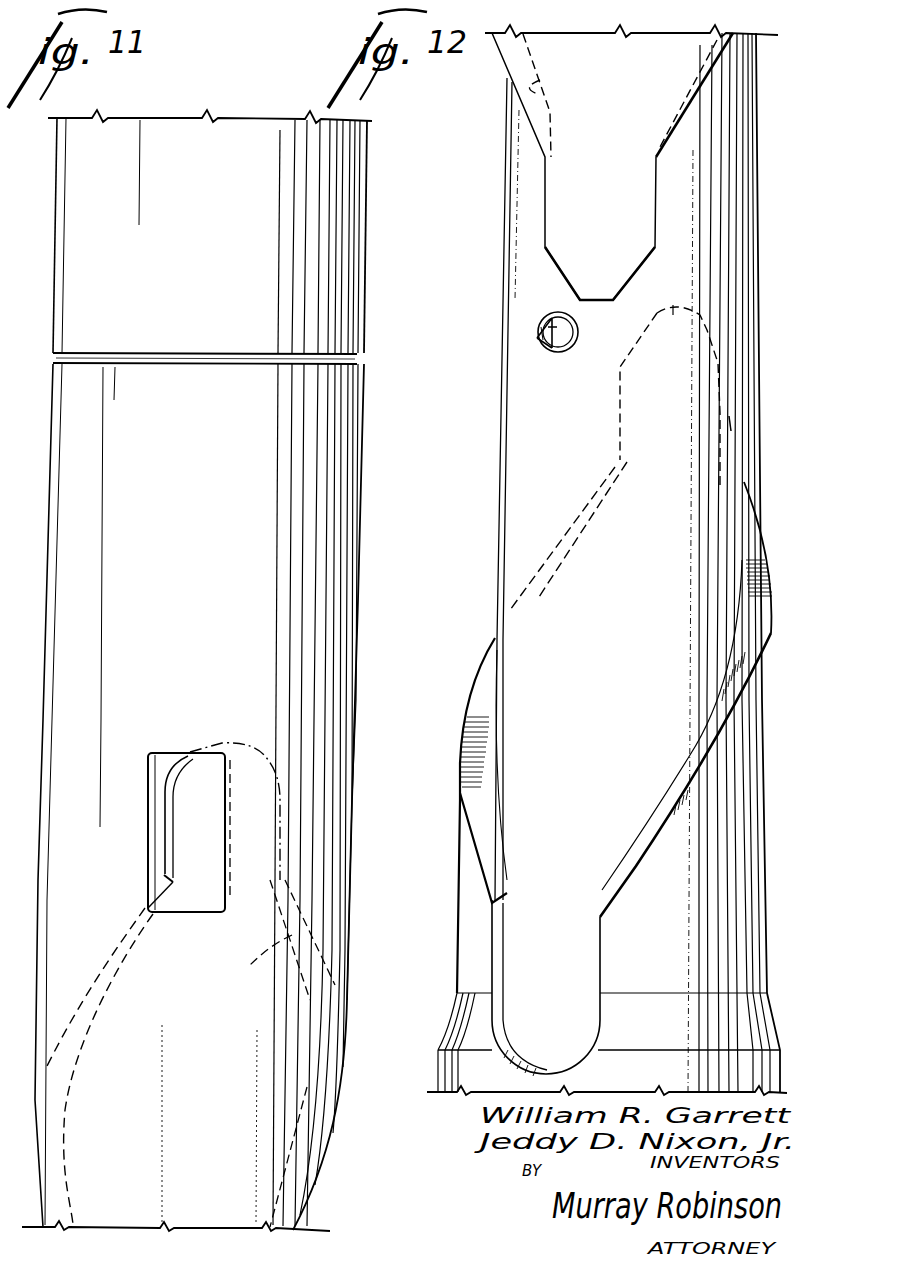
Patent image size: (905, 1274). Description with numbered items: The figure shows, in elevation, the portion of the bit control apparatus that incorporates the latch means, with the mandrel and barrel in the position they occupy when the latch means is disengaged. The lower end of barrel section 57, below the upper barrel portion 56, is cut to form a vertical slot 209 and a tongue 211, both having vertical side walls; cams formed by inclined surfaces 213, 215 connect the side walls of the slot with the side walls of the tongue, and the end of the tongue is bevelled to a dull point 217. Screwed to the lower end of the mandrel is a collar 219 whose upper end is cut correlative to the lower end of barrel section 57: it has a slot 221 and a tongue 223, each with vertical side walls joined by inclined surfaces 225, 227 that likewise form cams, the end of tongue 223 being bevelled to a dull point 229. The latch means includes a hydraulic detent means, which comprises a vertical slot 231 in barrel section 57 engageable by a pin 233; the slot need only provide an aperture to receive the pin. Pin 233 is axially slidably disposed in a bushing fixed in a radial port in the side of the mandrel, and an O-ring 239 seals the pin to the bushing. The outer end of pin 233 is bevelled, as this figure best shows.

In FIG. 11, the upper body section 56 is at (222, 280).
In FIG. 11, the barrel section 57 is at (218, 478).
In FIG. 11, the vertical slot 209 is at (173, 798).
In FIG. 12, the tongue 211 is at (545, 214).
In FIG. 11, the inclined surface 213 is at (168, 887).
In FIG. 12, the inclined surface 213 is at (540, 80).
In FIG. 11, the inclined surface 215 is at (262, 985).
In FIG. 12, the inclined surface 215 is at (712, 83).
In FIG. 12, the dull point 217 is at (598, 298).
In FIG. 12, the collar 219 is at (683, 843).
In FIG. 12, the slot 221 is at (600, 958).
In FIG. 12, the tongue 223 is at (748, 423).
In FIG. 12, the inclined surface 225 is at (483, 670).
In FIG. 12, the inclined surface 227 is at (753, 634).
In FIG. 12, the dull point 229 is at (677, 296).
In FIG. 11, the vertical slot 231 is at (222, 854).
In FIG. 12, the pin 233 is at (547, 323).
In FIG. 12, the O-ring 239 is at (559, 353).